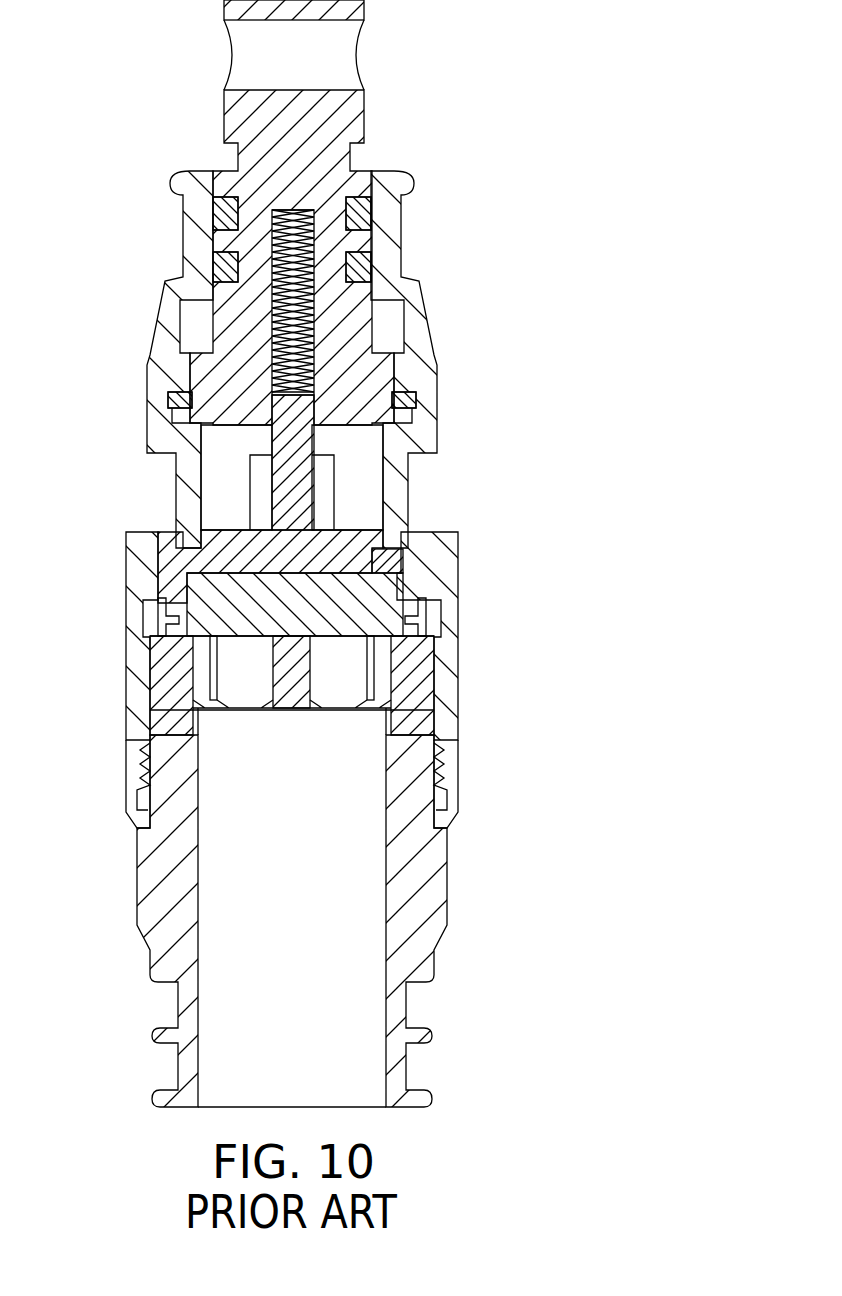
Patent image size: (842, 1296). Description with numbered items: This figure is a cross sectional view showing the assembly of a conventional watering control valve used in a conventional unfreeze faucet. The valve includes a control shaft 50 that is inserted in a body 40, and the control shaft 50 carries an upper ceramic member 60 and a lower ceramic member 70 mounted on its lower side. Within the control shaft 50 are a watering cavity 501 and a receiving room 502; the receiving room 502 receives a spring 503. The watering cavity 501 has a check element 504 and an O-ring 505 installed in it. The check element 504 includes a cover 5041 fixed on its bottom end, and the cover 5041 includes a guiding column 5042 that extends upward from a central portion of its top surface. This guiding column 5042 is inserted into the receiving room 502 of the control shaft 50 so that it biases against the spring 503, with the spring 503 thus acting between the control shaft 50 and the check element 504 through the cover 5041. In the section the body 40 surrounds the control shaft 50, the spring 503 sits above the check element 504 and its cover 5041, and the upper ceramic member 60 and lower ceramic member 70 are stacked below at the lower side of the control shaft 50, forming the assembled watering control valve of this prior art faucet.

The body 40 is at (445, 340).
The control shaft 50 is at (372, 111).
The watering cavity 501 is at (222, 465).
The receiving room 502 is at (280, 287).
The spring 503 is at (322, 270).
The check element 504 is at (317, 530).
The cover 5041 is at (228, 560).
The guiding column 5042 is at (395, 408).
The O-ring 505 is at (395, 570).
The upper ceramic member 60 is at (175, 596).
The lower ceramic member 70 is at (160, 657).